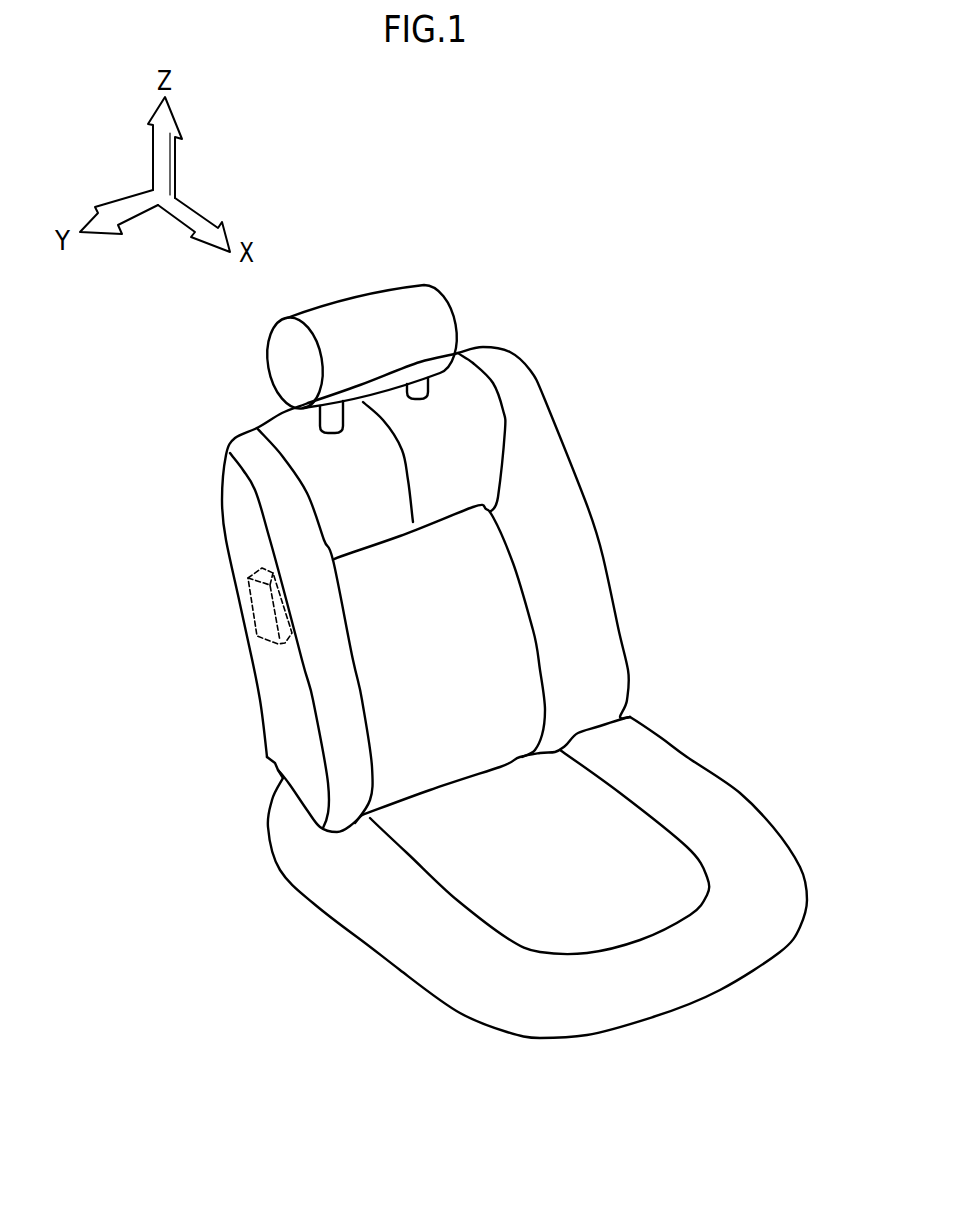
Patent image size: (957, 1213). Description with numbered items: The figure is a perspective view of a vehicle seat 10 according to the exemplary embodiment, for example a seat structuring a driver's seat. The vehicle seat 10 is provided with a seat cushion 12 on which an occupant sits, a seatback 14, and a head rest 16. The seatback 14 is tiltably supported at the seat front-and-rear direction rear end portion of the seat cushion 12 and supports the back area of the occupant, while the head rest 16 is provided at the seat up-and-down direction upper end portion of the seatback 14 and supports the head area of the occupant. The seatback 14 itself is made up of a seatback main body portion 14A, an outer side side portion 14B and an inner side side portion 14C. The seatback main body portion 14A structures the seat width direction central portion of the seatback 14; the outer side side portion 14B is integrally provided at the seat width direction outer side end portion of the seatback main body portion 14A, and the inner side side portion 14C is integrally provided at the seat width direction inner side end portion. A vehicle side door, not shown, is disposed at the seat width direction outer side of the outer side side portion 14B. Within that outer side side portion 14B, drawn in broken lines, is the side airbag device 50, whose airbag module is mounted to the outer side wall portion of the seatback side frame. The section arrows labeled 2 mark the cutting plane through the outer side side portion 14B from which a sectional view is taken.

The vehicle seat 10 is at (763, 313).
The seat cushion 12 is at (740, 793).
The seatback 14 is at (587, 495).
The seatback main body portion 14A is at (467, 623).
The outer side side portion 14B is at (290, 685).
The inner side side portion 14C is at (603, 557).
The head rest 16 is at (453, 303).
The side airbag device 50 is at (248, 595).
The cross-section line 2-2 (view direction of FIG. 2) 2 is at (260, 617).